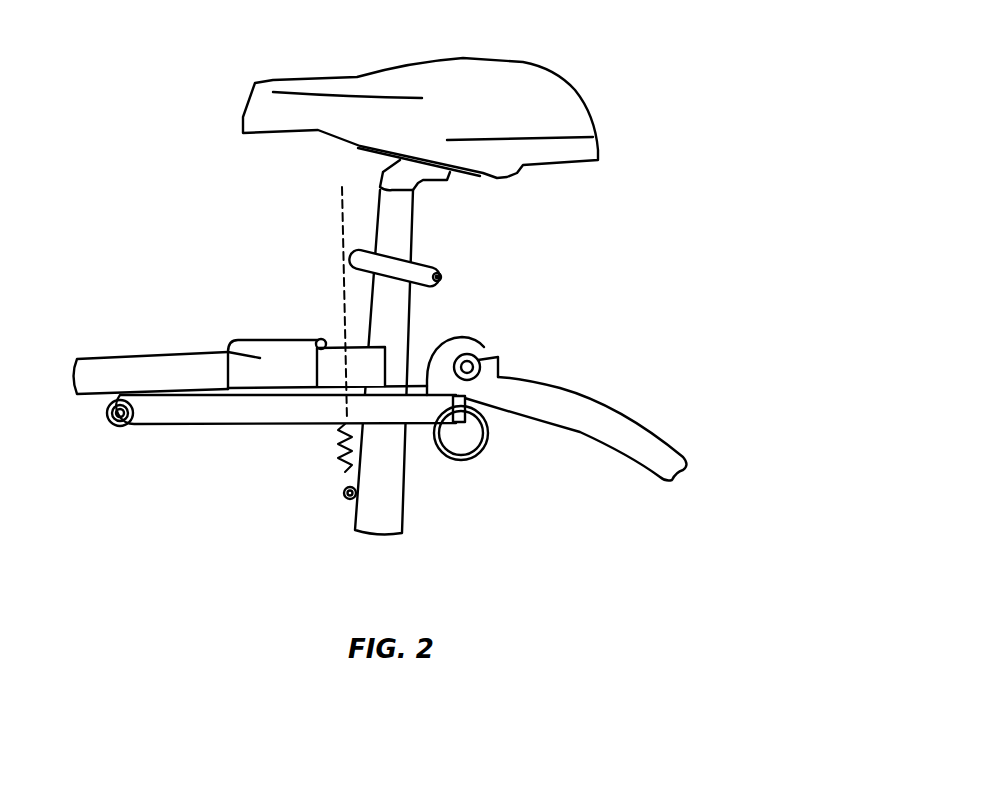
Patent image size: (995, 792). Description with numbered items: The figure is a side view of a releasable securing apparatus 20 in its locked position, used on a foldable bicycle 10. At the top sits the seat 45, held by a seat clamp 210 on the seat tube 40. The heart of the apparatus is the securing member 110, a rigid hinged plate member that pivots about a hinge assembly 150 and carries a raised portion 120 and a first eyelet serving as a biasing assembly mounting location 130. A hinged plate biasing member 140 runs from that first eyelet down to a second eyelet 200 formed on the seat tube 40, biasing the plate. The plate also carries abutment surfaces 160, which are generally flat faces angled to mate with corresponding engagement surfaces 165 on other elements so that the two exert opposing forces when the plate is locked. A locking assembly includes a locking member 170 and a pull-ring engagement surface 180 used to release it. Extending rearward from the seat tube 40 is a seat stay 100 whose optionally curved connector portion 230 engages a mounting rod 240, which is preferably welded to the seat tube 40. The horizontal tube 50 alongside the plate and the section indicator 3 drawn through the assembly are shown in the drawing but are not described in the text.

The foldable bicycle 10 is at (706, 64).
The releasable securing apparatus 20 is at (190, 481).
The seat tube 40 is at (407, 512).
The seat 45 is at (537, 73).
The top tube 50 is at (113, 358).
The seat stay 100 is at (633, 413).
The securing member 110 is at (253, 339).
The raised portion 120 is at (260, 358).
The biasing assembly mounting location 130 is at (323, 339).
The hinged plate biasing member 140 is at (347, 470).
The hinge assembly 150 is at (110, 415).
The abutment surface 160 is at (430, 340).
The engagement surface 165 is at (423, 423).
The locking member 170 is at (160, 418).
The engagement surface 180 is at (488, 442).
The biasing assembly mounting location 200 is at (347, 500).
The seat clamp 210 is at (430, 262).
The connector portion 230 is at (468, 355).
The mounting rod 240 is at (487, 357).
The section line 3- 3 is at (342, 187).